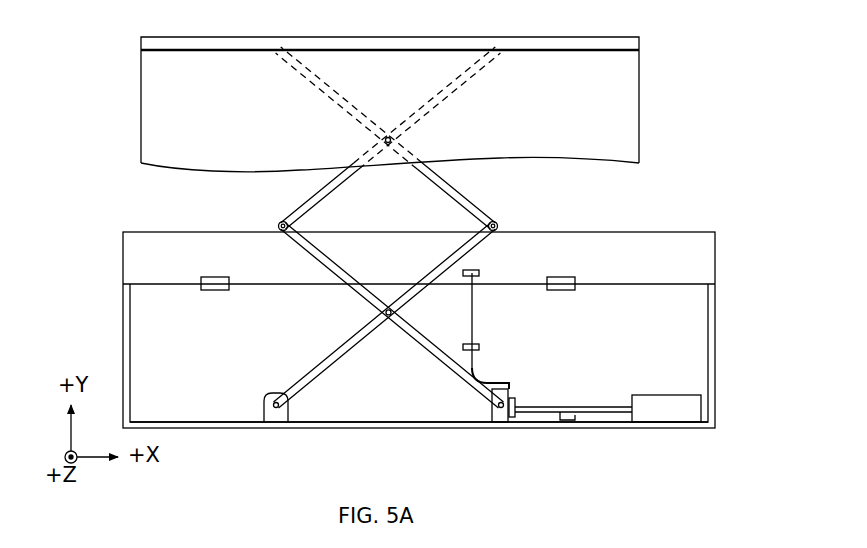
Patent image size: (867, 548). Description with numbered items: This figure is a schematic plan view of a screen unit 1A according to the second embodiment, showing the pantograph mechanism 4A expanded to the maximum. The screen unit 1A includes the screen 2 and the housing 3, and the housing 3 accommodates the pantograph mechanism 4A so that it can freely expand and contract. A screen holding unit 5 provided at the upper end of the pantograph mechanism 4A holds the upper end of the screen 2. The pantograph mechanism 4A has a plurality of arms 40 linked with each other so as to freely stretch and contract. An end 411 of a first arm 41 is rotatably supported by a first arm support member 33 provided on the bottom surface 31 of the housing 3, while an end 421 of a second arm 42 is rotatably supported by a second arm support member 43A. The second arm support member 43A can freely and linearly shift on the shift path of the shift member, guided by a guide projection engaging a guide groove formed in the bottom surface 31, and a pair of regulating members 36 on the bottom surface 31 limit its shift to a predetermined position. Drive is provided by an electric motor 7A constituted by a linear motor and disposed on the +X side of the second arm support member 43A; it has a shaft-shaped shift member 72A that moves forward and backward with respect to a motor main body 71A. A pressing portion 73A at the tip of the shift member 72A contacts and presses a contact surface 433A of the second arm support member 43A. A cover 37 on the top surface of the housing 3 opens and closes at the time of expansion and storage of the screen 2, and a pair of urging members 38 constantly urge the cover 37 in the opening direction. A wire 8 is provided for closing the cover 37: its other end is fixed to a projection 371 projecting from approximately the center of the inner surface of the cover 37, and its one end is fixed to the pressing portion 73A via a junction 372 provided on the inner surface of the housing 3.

The screen unit 1A is at (700, 176).
The screen 2 is at (630, 102).
The screen holding unit 5 is at (630, 43).
The housing 3 is at (738, 362).
The pantograph mechanism 4A is at (270, 204).
The arms 40 is at (390, 264).
The first arm 41 is at (345, 338).
The end of first arm 411 is at (283, 388).
The second arm 42 is at (402, 338).
The end of second arm 421 is at (483, 402).
The second arm support member 43A is at (490, 416).
The contact surface 433A is at (511, 414).
The bottom surface 31 is at (205, 420).
The first arm support member 33 is at (263, 419).
The regulating members 36 is at (568, 421).
The cover 37 is at (715, 253).
The urging members 38 is at (202, 278).
The projection 371 is at (479, 272).
The junction 372 is at (480, 346).
The wire 8 is at (474, 300).
The electric motor 7A is at (663, 415).
The motor main body 71A is at (692, 418).
The shift member 72A is at (617, 413).
The pressing portion 73A is at (512, 392).